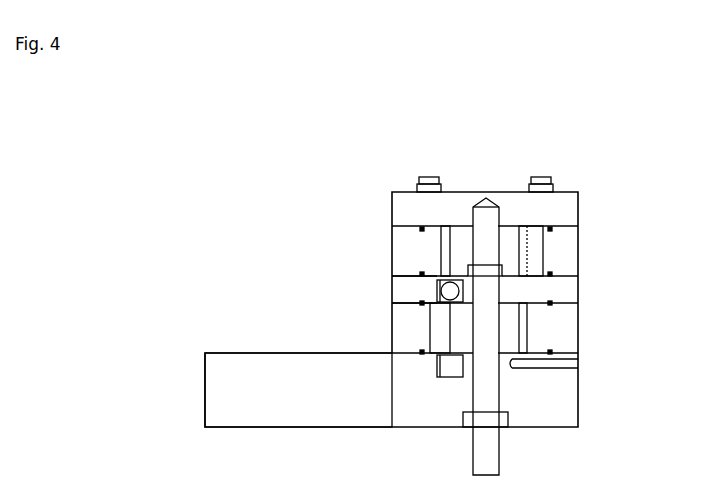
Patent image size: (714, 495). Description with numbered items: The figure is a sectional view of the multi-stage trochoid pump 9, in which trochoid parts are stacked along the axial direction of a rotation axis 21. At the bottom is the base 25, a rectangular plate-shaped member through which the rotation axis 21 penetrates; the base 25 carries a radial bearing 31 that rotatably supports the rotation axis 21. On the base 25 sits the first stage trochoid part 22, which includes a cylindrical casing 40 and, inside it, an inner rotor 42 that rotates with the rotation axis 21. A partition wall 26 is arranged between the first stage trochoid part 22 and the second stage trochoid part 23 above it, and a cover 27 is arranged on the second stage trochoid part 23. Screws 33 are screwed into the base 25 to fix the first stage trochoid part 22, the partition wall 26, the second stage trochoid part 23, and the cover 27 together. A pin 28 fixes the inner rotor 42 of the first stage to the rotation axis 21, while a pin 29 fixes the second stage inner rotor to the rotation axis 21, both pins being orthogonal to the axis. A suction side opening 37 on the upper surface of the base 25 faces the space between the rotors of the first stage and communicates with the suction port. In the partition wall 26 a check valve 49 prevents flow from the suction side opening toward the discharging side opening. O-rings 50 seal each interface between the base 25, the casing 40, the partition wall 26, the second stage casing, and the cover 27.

The multi-stage trochoid pump 9 is at (399, 180).
The rotation axis 21 is at (490, 460).
The first stage trochoid part 22 is at (568, 330).
The second stage trochoid part 23 is at (563, 250).
The base 25 is at (353, 418).
The partition wall 26 is at (566, 290).
The cover 27 is at (570, 200).
The pin 28 is at (430, 305).
The pin 29 is at (490, 267).
The radial bearing 31 is at (508, 416).
The screws 33 is at (429, 177).
The suction side opening 37 is at (452, 363).
The casing 40 is at (572, 343).
The inner rotor 42 is at (463, 328).
The check valve 49 is at (450, 291).
The O-ring 50 is at (552, 229).